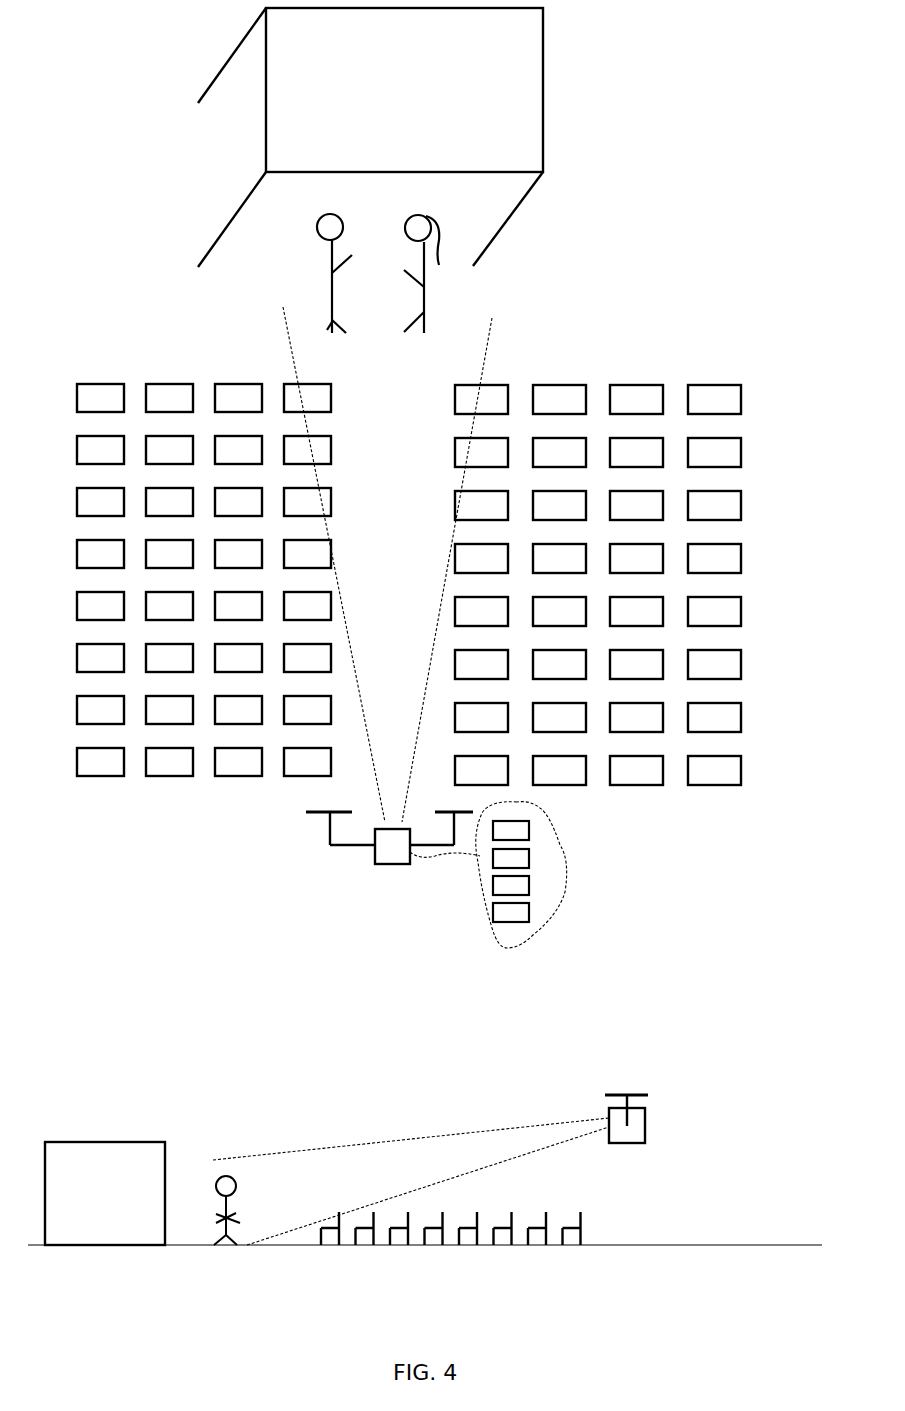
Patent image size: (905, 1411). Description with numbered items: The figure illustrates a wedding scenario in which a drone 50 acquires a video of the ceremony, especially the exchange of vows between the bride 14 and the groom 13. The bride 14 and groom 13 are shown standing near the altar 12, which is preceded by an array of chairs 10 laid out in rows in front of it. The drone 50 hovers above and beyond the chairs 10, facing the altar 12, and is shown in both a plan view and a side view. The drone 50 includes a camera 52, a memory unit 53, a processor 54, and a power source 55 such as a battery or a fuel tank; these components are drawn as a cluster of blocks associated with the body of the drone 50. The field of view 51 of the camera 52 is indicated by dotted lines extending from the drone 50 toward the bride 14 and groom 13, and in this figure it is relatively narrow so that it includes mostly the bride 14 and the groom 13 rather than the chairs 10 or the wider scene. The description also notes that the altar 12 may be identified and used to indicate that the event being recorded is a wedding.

The chairs 10 is at (111, 410).
The altar 12 is at (416, 102).
The groom 13 is at (333, 301).
The bride 14 is at (424, 303).
The drone 50 is at (397, 878).
The field of view 51 is at (403, 761).
The camera 52 is at (521, 838).
The memory unit 53 is at (521, 866).
The processor 54 is at (521, 893).
The power source 55 is at (521, 920).